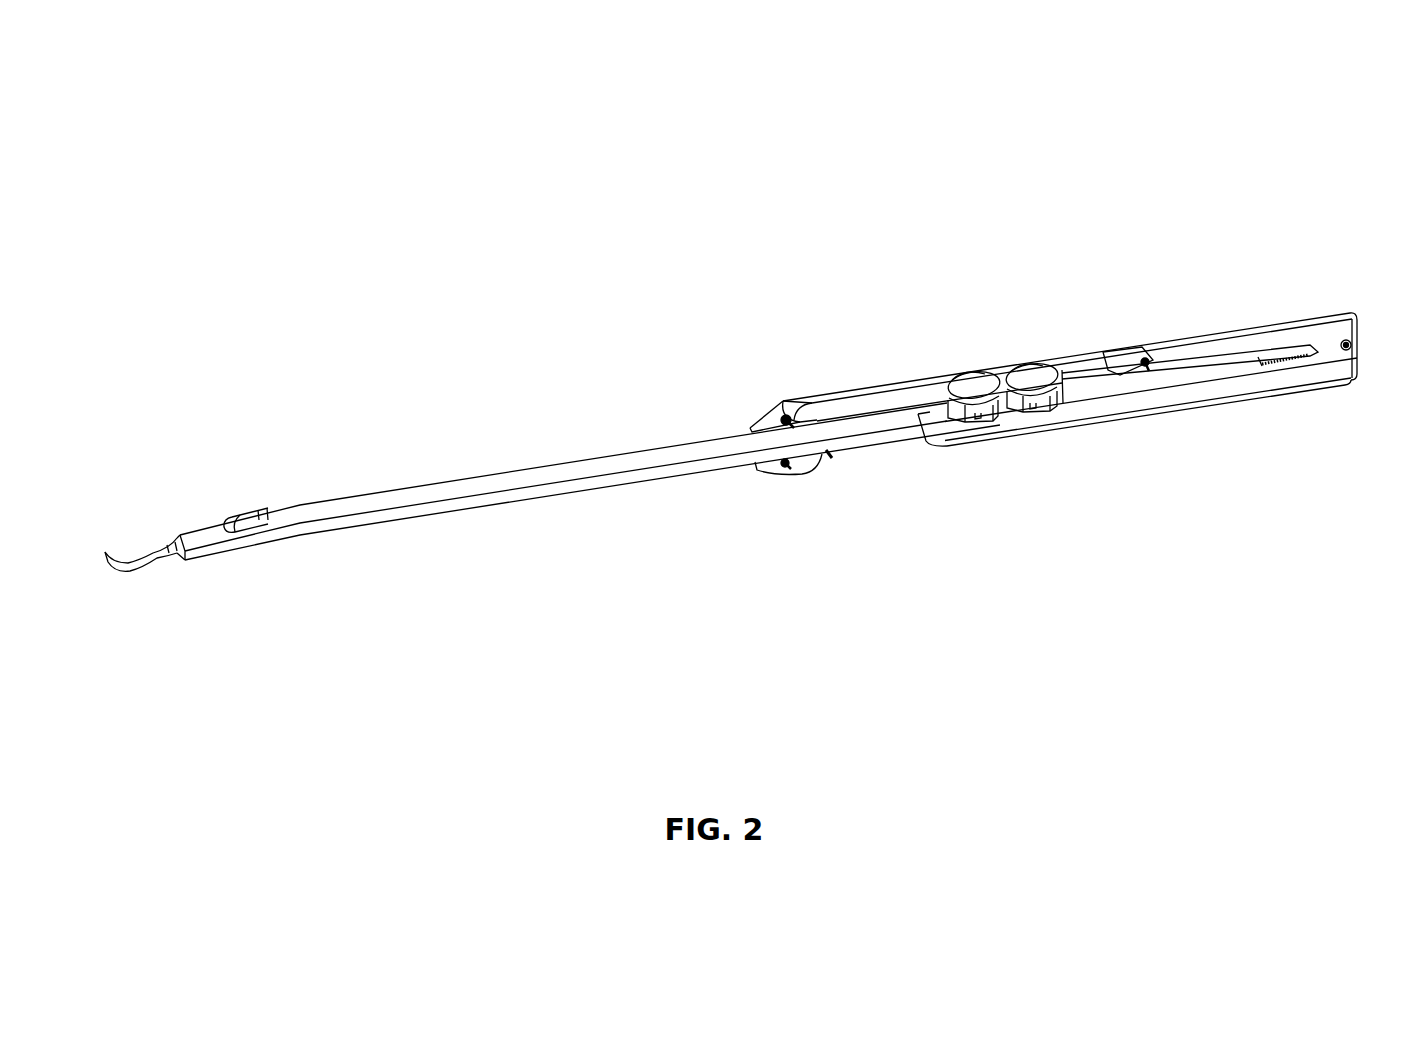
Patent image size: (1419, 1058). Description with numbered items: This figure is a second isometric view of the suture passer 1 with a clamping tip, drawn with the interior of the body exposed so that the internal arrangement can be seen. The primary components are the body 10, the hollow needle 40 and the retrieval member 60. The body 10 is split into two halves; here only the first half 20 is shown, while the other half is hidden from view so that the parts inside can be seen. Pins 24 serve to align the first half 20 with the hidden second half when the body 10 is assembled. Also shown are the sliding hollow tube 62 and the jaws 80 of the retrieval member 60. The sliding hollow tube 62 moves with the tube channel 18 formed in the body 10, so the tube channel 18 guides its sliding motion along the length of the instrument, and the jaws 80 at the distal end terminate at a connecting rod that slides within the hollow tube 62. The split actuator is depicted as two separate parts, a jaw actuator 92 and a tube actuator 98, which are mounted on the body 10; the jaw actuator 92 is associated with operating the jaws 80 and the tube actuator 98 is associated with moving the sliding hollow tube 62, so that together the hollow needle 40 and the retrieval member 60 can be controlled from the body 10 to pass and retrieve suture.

The suture passer 1 is at (1206, 138).
The body 10 is at (1207, 312).
The tube channel 18 is at (1285, 353).
The first half 20 is at (850, 385).
The pins 24 is at (1353, 346).
The hollow needle 40 is at (564, 524).
The retrieval member 60 is at (557, 440).
The sliding hollow tube 62 is at (483, 480).
The jaws 80 is at (242, 514).
The jaw actuator 92 is at (975, 384).
The tube actuator 98 is at (1037, 374).